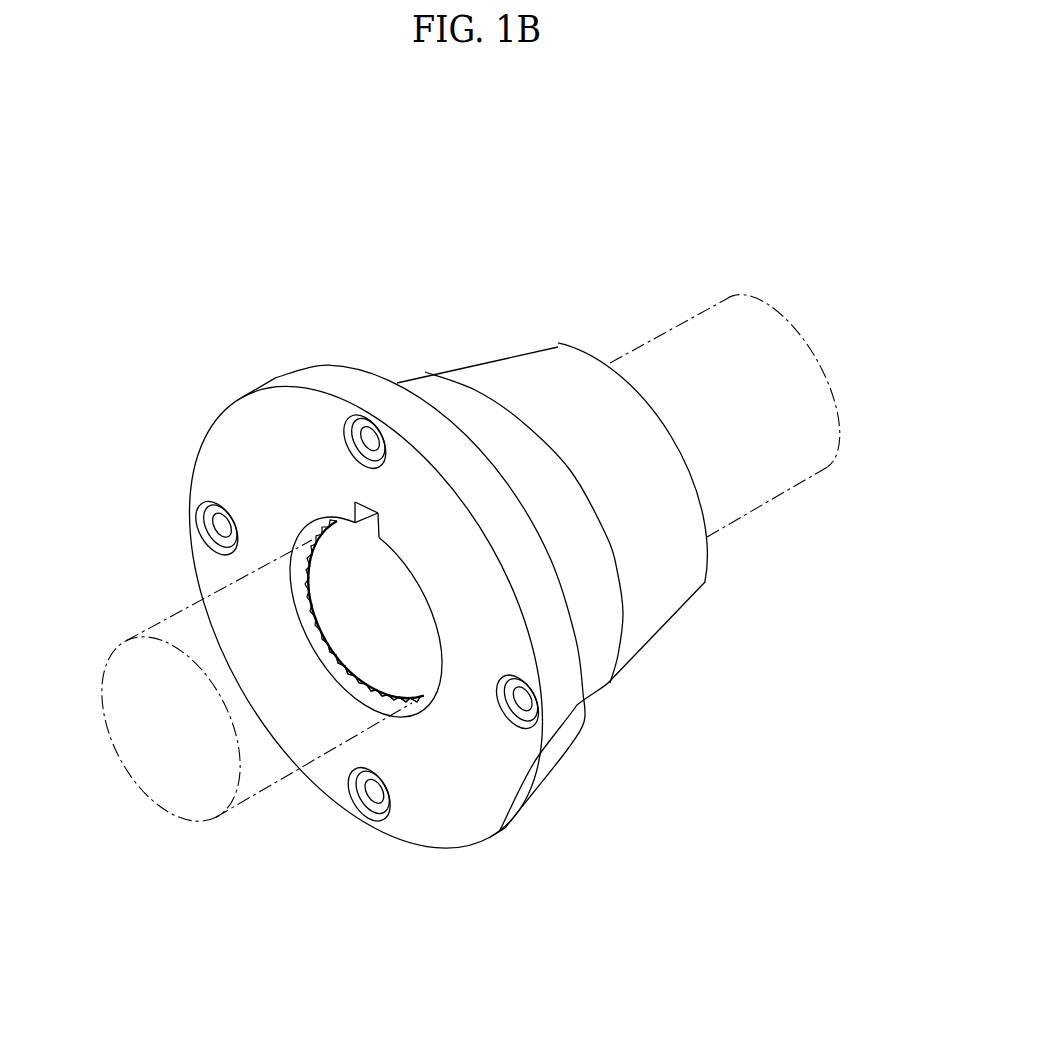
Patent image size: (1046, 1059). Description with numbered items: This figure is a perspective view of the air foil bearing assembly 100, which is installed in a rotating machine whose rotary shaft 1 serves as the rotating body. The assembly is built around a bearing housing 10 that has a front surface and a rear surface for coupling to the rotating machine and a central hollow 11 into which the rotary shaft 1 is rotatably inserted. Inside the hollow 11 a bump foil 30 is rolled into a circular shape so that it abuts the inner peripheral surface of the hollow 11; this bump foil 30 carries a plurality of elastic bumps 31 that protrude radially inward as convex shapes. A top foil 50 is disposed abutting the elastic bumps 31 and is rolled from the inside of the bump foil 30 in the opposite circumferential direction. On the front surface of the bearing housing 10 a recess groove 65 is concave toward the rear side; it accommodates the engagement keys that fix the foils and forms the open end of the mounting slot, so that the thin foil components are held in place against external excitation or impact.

The rotary shaft 1 is at (256, 795).
The bearing housing 10 is at (400, 360).
The hollow 11 is at (378, 716).
The bump foil 30 is at (310, 591).
The elastic bumps 31 is at (307, 573).
The top foil 50 is at (364, 690).
The recess groove 65 is at (353, 512).
The air foil bearing assembly 100 is at (501, 254).